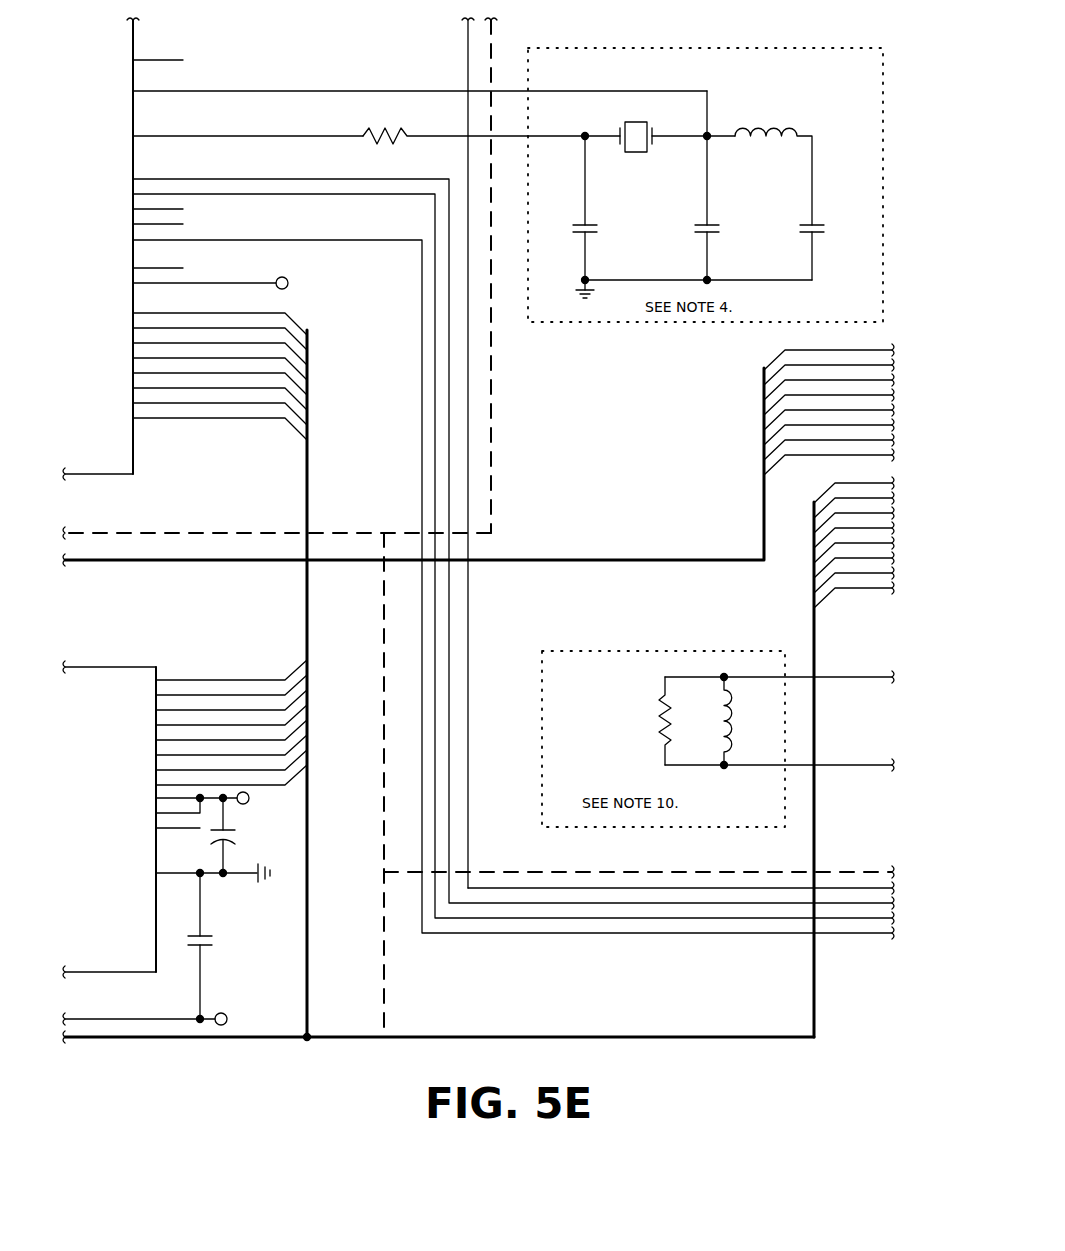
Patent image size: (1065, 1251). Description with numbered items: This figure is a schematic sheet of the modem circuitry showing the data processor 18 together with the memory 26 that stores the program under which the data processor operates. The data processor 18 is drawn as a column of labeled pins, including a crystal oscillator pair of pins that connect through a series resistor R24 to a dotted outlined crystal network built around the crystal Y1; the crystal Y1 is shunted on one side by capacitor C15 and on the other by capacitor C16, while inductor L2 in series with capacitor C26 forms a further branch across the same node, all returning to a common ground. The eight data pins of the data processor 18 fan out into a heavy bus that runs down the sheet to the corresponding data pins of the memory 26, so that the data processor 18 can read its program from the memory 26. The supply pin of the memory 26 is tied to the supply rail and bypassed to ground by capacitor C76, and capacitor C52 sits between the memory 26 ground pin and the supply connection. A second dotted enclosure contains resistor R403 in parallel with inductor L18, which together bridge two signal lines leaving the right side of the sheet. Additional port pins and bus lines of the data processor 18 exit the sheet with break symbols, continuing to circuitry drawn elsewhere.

The data processor 18 is at (654, 484).
The memory 26 is at (169, 627).
The resistor R24 100 ohm R24 is at (474, 136).
The crystal Y1 28.224 MHz Y1 is at (660, 136).
The inductor L2 4.7uH L2 is at (773, 164).
The capacitor C15 10pF C15 is at (606, 208).
The capacitor C16 10pF C16 is at (728, 208).
The capacitor C26 18pF C26 is at (833, 242).
The resistor R403 0 ohm R403 is at (641, 721).
The inductor L18 is at (742, 721).
The capacitor C76 10uF C76 is at (246, 835).
The capacitor C52 0.01uF C52 is at (228, 946).